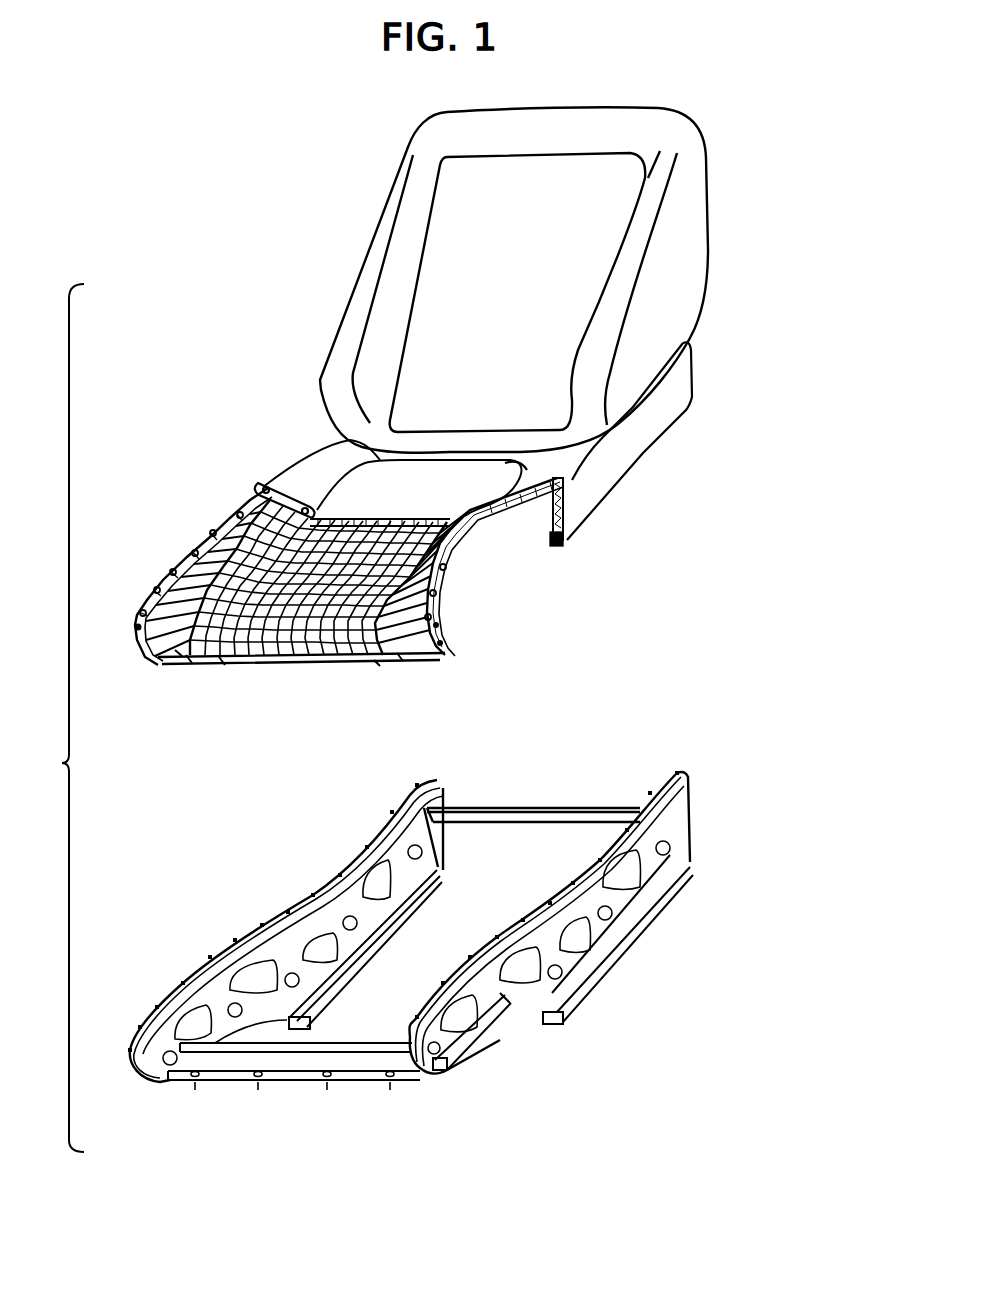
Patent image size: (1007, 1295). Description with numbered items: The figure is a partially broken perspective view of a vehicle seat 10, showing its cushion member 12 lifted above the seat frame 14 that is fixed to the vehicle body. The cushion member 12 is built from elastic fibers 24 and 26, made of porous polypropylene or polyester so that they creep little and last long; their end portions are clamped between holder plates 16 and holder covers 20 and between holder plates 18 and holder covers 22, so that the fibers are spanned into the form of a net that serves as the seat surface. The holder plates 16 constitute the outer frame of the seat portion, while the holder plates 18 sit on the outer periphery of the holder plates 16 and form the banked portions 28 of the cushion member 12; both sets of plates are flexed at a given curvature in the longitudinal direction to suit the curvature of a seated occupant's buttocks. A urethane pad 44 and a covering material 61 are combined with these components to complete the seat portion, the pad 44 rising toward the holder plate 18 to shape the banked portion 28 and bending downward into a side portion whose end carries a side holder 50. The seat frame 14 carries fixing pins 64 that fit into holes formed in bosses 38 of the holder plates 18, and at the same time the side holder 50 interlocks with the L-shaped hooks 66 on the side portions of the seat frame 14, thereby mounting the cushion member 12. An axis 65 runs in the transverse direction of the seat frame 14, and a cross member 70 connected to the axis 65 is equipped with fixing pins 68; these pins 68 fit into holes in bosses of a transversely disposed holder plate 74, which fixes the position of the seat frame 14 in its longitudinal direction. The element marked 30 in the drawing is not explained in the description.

The vehicle seat 10 is at (735, 246).
The cushion member 12 is at (305, 447).
The seat frame 14 is at (746, 784).
The holder plates 16 is at (190, 657).
The holder plates 18 is at (147, 657).
The holder covers 20 is at (297, 487).
The holder covers 22 is at (227, 512).
The elastic fibers 24 is at (307, 640).
The elastic fibers 26 is at (205, 543).
The banked portions 28 is at (570, 474).
The front tab 30 is at (178, 652).
The bosses 38 is at (135, 627).
The urethane pad 44 is at (366, 518).
The side holder 50 is at (565, 545).
The covering material 61 is at (565, 503).
The fixing pins 64 is at (313, 895).
The axis 65 is at (330, 1047).
The L-shaped hooks 66 is at (600, 942).
The fixing pins 68 is at (257, 1076).
The cross member 70 is at (290, 1075).
The holder plate 74 is at (222, 660).